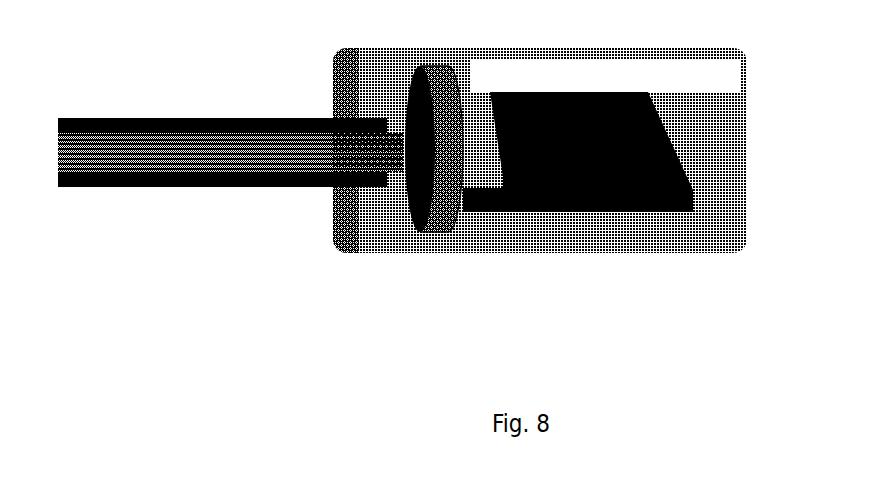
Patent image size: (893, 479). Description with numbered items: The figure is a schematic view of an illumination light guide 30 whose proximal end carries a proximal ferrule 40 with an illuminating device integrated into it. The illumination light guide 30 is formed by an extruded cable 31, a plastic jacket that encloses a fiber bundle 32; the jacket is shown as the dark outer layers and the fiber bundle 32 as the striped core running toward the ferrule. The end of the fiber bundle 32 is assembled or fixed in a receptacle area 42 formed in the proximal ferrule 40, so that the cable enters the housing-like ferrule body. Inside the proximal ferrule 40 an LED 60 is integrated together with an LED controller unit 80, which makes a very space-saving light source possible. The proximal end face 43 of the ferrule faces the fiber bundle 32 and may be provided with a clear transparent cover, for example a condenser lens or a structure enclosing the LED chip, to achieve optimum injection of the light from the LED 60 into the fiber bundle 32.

The illumination light guide 30 is at (130, 118).
The cable 31 is at (183, 188).
The fiber bundle 32 is at (245, 163).
The proximal ferrule 40 is at (592, 253).
The receptacle area 42 is at (355, 190).
The proximal end face 43 is at (405, 173).
The LED 60 is at (427, 173).
The LED controller unit 80 is at (523, 162).